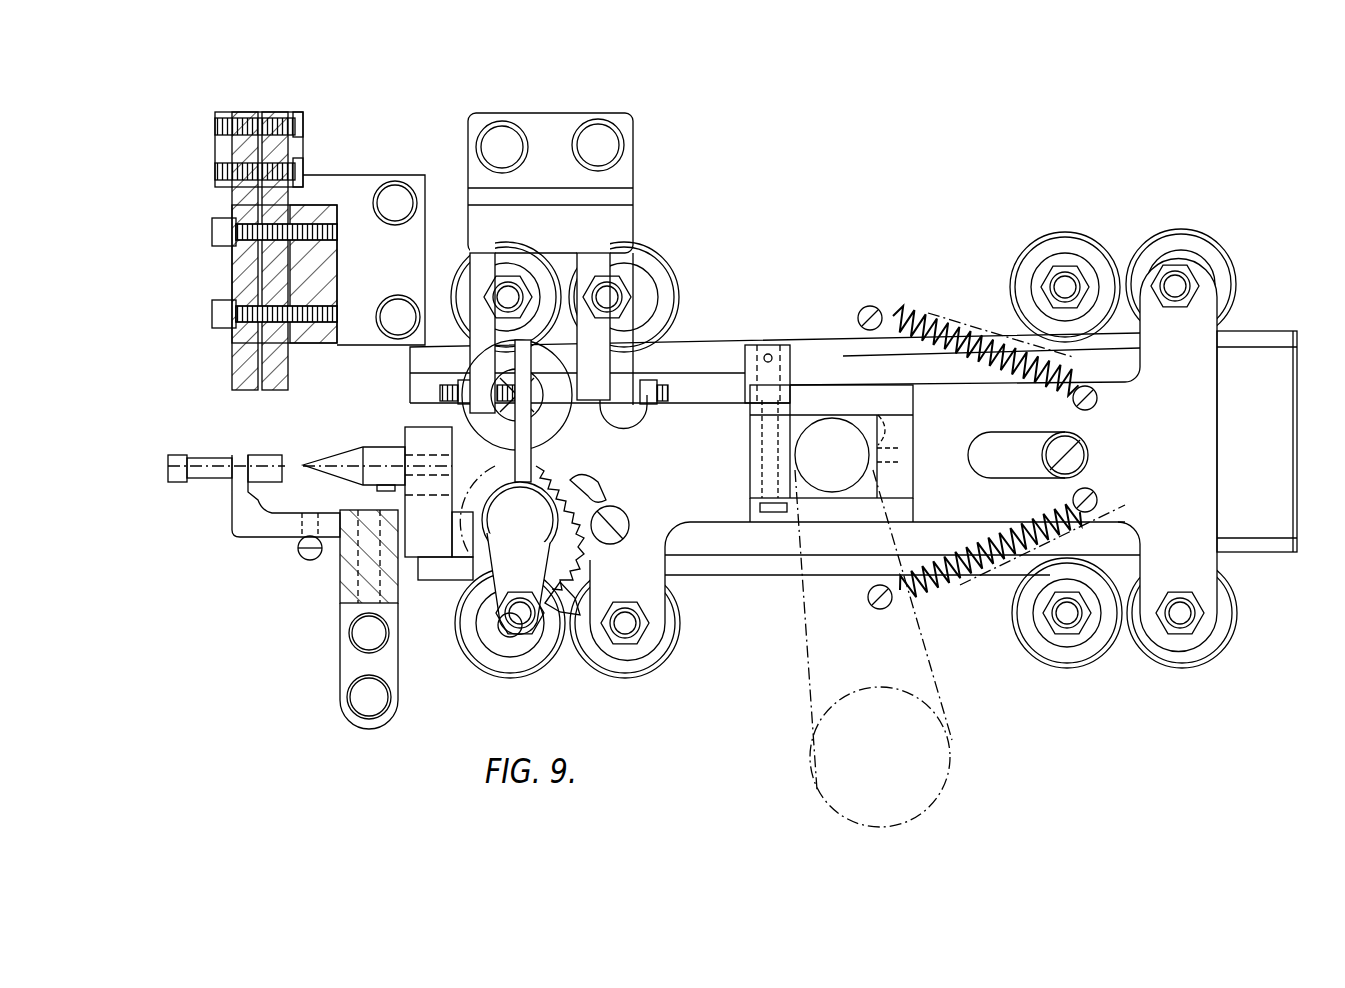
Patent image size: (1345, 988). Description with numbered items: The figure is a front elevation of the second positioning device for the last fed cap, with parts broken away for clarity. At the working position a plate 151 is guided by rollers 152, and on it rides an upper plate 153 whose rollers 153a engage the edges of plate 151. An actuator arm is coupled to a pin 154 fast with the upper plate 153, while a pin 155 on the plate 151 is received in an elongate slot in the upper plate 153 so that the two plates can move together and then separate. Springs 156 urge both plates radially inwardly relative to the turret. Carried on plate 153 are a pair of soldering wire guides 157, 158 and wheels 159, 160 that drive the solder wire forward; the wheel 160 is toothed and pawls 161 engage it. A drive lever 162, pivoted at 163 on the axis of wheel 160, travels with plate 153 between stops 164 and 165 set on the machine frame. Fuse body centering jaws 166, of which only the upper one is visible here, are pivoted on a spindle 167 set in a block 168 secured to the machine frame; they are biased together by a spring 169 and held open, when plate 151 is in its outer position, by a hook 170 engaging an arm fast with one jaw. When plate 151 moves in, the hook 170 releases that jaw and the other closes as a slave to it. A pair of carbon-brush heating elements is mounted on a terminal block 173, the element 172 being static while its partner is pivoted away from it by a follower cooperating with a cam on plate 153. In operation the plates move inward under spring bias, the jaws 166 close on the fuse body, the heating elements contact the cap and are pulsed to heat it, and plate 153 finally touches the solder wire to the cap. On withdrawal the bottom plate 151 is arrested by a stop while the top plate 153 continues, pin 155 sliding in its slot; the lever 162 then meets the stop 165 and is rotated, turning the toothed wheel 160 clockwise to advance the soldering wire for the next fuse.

The plate 151 is at (743, 352).
The rollers 152 is at (1078, 247).
The plate 153 is at (1207, 455).
The rollers 153a is at (1196, 250).
The pin 154 is at (833, 475).
The pin 155 is at (1088, 452).
The springs 156 is at (978, 332).
The soldering wire guide 157 is at (882, 422).
The soldering wire guide 158 is at (380, 447).
The wheel 159 is at (563, 413).
The toothed wheel 160 is at (478, 570).
The pawls 161 is at (578, 493).
The drive lever 162 is at (537, 440).
The pivot 163 is at (547, 518).
The stop 164 is at (410, 372).
The stop 165 is at (628, 388).
The fuse body centering jaws 166 is at (236, 485).
The spindle 167 is at (345, 583).
The block 168 is at (398, 565).
The spring 169 is at (300, 550).
The hook 170 is at (355, 465).
The heating element 172 is at (245, 365).
The terminal block 173 is at (363, 197).